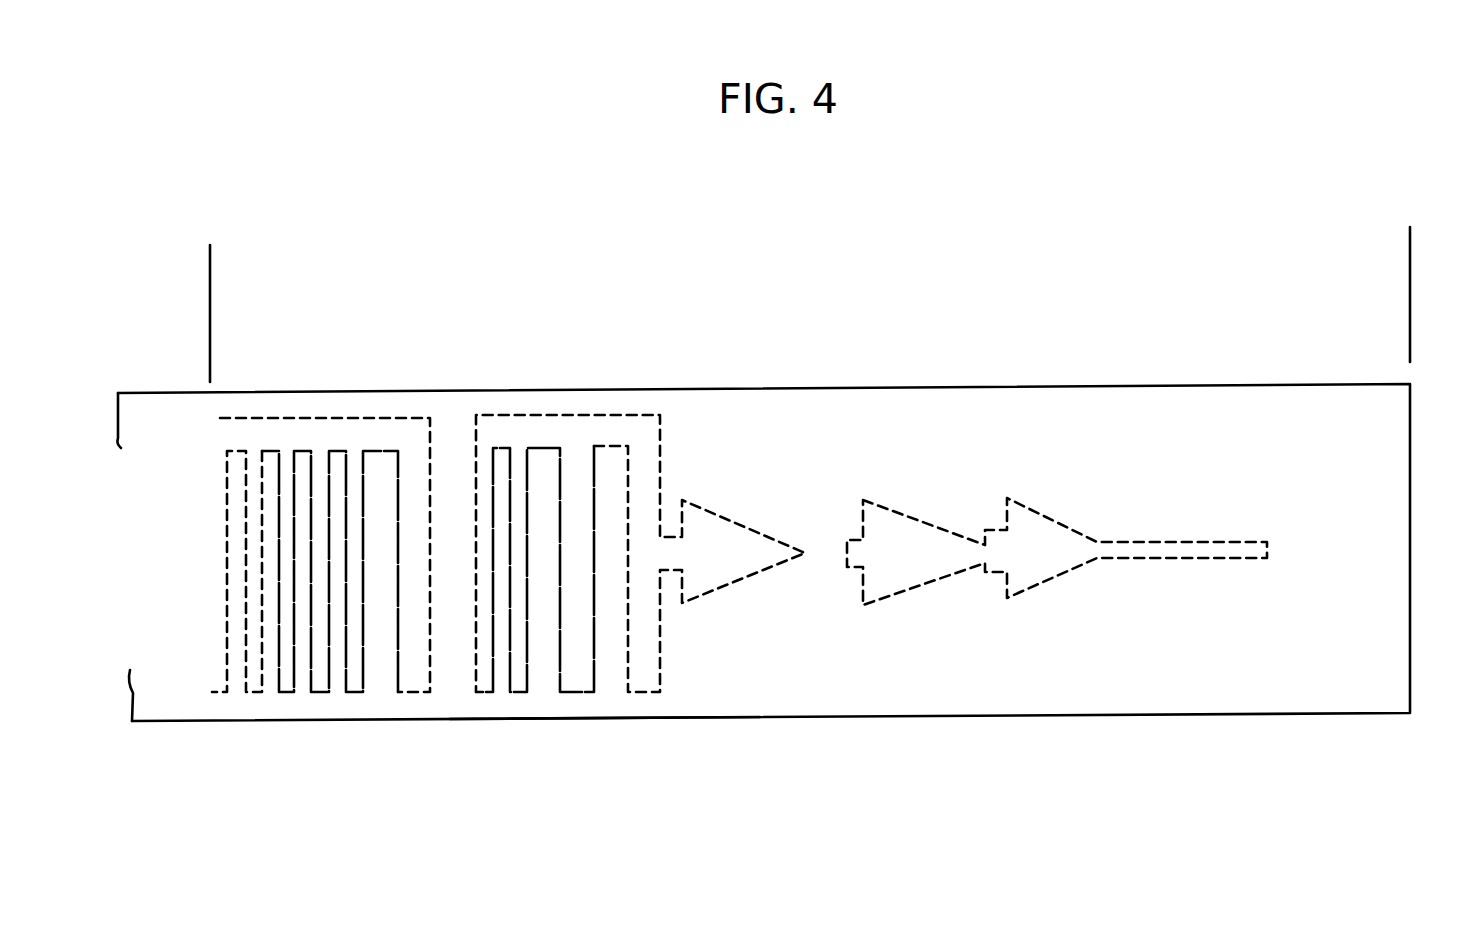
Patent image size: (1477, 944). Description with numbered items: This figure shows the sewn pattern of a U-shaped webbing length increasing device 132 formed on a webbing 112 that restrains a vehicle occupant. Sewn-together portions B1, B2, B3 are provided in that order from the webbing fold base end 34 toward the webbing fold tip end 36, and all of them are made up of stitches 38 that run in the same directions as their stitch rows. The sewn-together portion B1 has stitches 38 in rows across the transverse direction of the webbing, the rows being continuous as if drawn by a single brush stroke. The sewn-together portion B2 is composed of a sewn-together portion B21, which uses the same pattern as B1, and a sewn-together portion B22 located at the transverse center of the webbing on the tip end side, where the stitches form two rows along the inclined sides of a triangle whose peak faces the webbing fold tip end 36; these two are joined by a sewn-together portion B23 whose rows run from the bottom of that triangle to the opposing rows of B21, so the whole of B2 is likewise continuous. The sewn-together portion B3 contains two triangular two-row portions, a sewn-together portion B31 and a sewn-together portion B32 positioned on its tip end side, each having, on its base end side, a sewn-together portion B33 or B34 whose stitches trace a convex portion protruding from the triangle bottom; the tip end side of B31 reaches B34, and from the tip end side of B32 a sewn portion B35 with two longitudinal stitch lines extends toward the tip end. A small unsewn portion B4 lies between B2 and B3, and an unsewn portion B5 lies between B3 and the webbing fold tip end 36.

The webbing 112 is at (827, 735).
The webbing length increasing device 132 is at (612, 718).
The webbing fold base end 34 is at (210, 258).
The webbing fold tip end 36 is at (1410, 298).
The stitches 38 is at (226, 668).
The sewn-together portion B1 is at (450, 302).
The sewn-together portion B2 is at (800, 300).
The sewn-together portion B3 is at (1263, 297).
The unsewn portion B4 is at (845, 258).
The unsewn portion B5 is at (1405, 250).
The sewn-together portion B21 is at (658, 347).
The sewn-together portion B22 is at (800, 347).
The sewn-together portion B23 is at (657, 379).
The sewn-together portion B31 is at (987, 347).
The sewn-together portion B32 is at (1100, 345).
The sewn-together portion B33 is at (863, 379).
The sewn-together portion B34 is at (980, 379).
The sewn portion B35 is at (1263, 345).